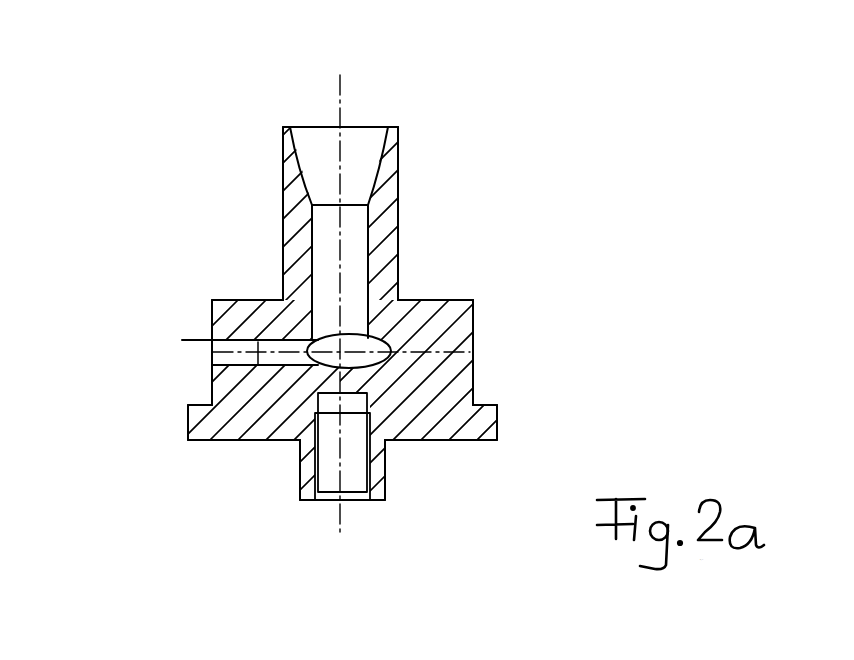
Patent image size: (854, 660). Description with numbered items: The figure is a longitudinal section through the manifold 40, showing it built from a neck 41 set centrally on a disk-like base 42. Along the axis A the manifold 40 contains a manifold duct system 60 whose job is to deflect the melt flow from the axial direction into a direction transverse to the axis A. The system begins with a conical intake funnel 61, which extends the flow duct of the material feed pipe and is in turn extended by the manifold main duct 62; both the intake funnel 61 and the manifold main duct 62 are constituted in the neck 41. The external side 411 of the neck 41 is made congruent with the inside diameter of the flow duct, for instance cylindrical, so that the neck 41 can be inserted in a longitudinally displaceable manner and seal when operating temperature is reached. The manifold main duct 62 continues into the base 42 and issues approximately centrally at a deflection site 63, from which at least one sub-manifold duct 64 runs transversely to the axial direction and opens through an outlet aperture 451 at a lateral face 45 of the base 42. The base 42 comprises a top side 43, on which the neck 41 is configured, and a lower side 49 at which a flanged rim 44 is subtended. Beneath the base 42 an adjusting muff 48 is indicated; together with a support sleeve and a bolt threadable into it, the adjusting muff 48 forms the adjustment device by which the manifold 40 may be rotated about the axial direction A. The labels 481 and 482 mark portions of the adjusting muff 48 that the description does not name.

The manifold 40 is at (141, 74).
The neck 41 is at (380, 192).
The external side of the neck 411 is at (398, 210).
The base 42 is at (450, 335).
The top side 43 is at (428, 297).
The flanged rim 44 is at (495, 442).
The lateral face 45 is at (472, 363).
The outlet aperture 451 is at (208, 349).
The adjusting muff 48 is at (380, 472).
The outlet bore 481 is at (365, 453).
The counterbore 482 is at (333, 472).
The lower side 49 is at (425, 440).
The manifold duct system 60 is at (312, 207).
The conical intake funnel 61 is at (348, 143).
The manifold main duct 62 is at (328, 260).
The deflection site 63 is at (333, 357).
The sub-manifold duct 64 is at (258, 345).
The axis A is at (339, 75).